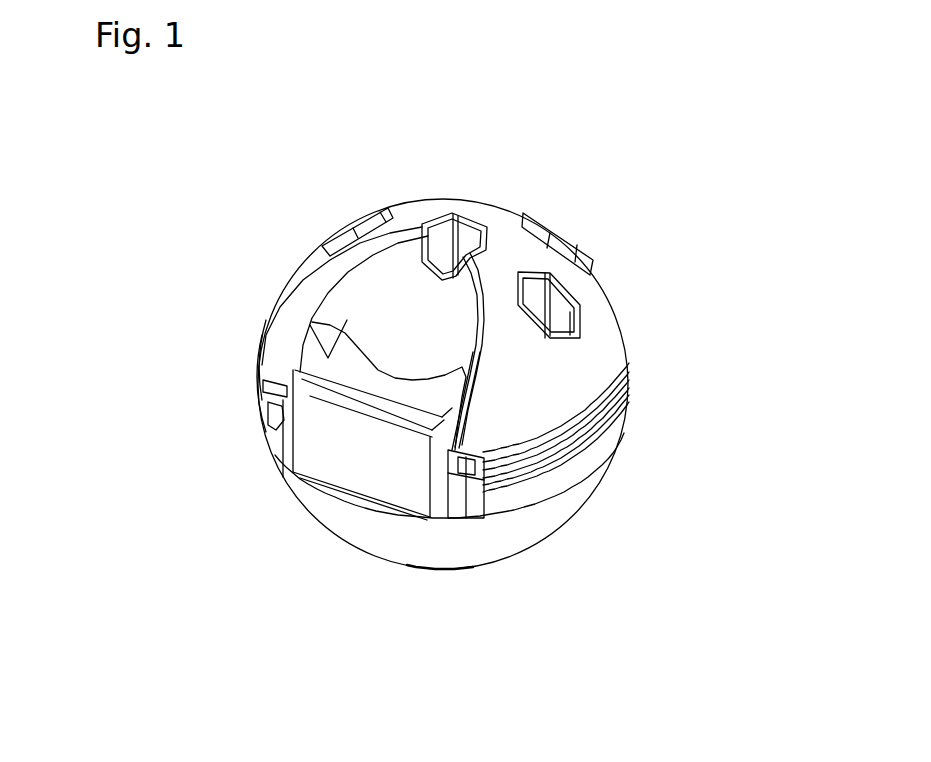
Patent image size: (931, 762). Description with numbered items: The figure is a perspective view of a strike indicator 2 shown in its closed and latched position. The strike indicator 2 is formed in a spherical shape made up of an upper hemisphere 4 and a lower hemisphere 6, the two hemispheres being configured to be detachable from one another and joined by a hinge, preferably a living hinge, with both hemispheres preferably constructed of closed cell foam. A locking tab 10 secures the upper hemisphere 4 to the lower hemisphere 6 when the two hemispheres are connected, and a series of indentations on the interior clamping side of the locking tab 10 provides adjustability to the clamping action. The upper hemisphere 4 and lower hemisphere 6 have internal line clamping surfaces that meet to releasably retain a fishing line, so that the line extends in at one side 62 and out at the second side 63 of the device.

The strike indicator 2 is at (570, 548).
The upper hemisphere 4 is at (513, 207).
The lower hemisphere 6 is at (332, 532).
The locking tab 10 is at (318, 442).
The fishing line entry side 62 is at (655, 390).
The fishing line exit side 63 is at (237, 328).